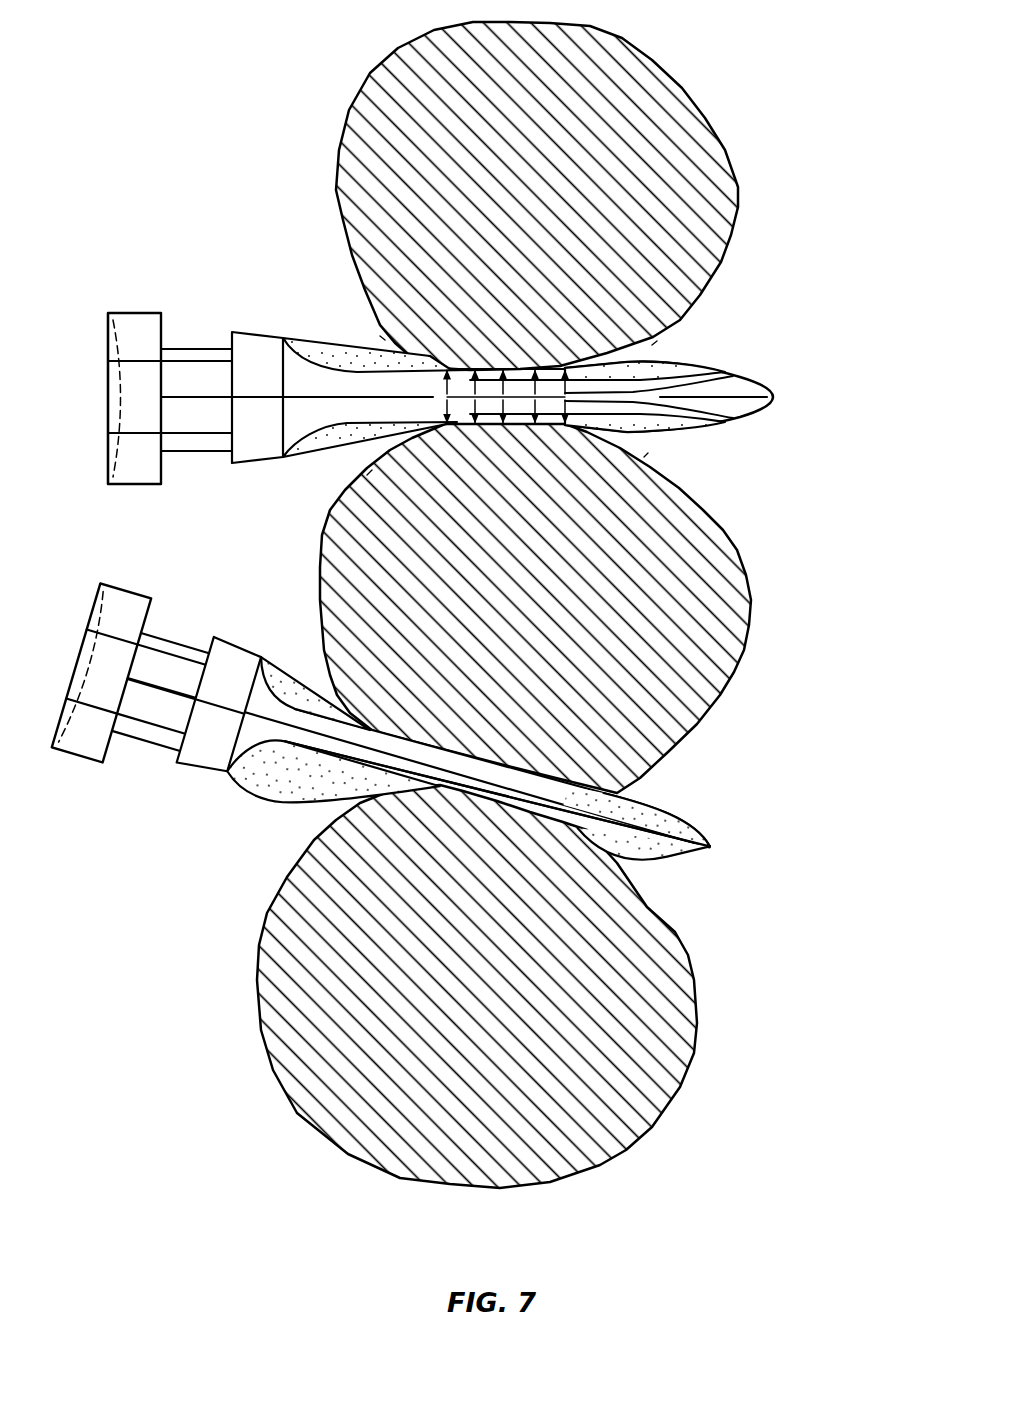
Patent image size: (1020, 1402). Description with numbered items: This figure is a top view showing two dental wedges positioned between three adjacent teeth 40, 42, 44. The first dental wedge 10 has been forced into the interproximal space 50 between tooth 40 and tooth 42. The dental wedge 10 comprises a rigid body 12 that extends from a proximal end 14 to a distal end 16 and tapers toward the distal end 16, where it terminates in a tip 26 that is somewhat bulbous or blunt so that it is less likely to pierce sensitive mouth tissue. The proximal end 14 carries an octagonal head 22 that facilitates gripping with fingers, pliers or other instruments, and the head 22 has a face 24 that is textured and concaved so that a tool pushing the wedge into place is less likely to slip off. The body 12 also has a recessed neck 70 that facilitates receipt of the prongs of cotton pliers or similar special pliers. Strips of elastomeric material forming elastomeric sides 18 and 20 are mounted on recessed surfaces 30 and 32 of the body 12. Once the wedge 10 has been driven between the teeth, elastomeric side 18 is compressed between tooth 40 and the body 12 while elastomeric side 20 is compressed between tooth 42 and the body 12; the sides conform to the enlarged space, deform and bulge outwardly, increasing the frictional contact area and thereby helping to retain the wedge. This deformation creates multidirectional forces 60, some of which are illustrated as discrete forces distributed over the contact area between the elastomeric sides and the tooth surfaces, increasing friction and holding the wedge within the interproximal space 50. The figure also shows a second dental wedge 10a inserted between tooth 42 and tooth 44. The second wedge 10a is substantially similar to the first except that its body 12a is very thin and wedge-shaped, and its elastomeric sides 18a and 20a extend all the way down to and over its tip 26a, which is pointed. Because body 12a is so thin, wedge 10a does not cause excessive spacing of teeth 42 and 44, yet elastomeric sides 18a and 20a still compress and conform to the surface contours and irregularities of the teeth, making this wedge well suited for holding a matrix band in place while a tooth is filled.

The dental wedge 10 is at (76, 257).
The second dental wedge 10a is at (40, 793).
The body 12 is at (305, 386).
The body 12a is at (419, 759).
The proximal end 14 is at (126, 490).
The distal end 16 is at (710, 400).
The elastomeric side 18 is at (340, 350).
The elastomeric side 18a is at (315, 694).
The elastomeric side 20 is at (333, 460).
The elastomeric side 20a is at (331, 786).
The head 22 is at (126, 312).
The face 24 is at (94, 400).
The tip 26 is at (757, 389).
The tip 26a is at (719, 880).
The recessed surface 30 is at (679, 362).
The recessed surface 32 is at (681, 431).
The tooth 40 is at (673, 108).
The tooth 42 is at (667, 745).
The tooth 44 is at (631, 1127).
The interproximal space 50 is at (376, 332).
The multidirectional forces 60 is at (703, 378).
The recessed neck 70 is at (186, 352).